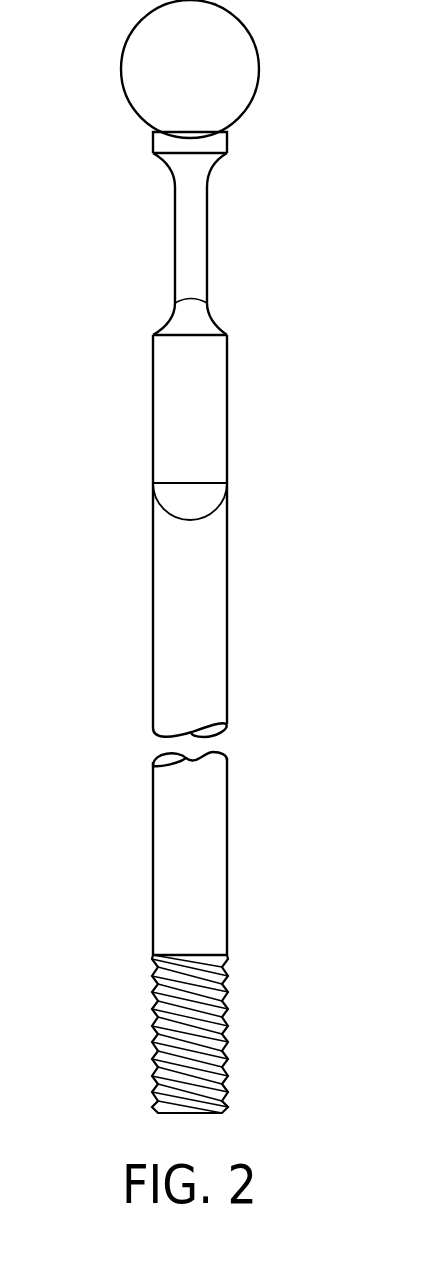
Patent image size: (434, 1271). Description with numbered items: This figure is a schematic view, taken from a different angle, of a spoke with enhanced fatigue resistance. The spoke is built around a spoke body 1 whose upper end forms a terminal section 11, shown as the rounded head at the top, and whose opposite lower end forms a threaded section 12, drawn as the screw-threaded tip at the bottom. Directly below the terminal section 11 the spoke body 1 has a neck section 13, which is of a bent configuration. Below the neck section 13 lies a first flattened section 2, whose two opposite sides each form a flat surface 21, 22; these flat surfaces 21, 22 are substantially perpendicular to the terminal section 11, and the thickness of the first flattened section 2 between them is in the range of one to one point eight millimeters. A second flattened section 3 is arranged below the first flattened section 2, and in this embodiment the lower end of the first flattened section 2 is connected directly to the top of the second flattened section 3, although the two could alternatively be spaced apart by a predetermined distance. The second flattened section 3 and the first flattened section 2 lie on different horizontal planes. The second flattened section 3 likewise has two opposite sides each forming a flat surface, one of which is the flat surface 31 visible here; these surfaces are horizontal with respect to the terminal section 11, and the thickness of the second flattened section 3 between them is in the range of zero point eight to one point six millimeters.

The spoke body 1 is at (227, 607).
The first flattened section 2 is at (211, 244).
The second flattened section 3 is at (174, 427).
The terminal section 11 is at (147, 69).
The threaded section 12 is at (210, 1029).
The neck section 13 is at (215, 143).
The flat surface 21 is at (175, 222).
The flat surface 22 is at (207, 262).
The flat surface 31 is at (210, 429).